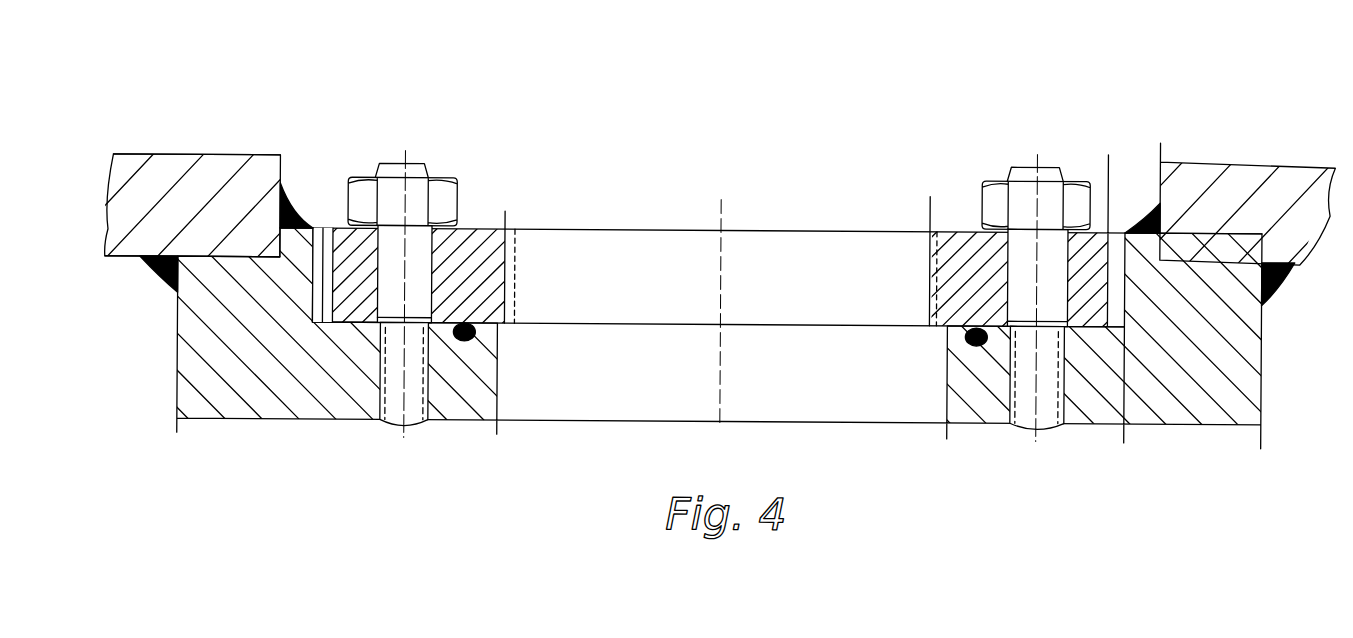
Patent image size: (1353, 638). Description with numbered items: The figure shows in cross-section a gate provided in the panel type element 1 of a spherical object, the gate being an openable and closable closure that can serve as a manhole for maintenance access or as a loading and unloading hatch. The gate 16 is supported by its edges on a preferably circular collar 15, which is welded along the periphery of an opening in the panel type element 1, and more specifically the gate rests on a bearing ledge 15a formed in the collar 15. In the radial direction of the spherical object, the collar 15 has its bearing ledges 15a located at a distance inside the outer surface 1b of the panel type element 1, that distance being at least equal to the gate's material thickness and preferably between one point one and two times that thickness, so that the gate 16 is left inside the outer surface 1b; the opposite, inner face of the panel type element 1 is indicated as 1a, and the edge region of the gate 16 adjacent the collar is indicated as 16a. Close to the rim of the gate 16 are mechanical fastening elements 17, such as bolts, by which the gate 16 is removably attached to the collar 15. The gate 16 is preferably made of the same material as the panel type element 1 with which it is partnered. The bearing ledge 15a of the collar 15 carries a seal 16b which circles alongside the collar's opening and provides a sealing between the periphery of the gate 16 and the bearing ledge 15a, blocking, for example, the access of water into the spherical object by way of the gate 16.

The panel type element 1 is at (240, 168).
The lower side of panel 1a is at (113, 257).
The outer surface 1b is at (165, 148).
The collar 15 is at (203, 377).
The bearing ledge 15a is at (318, 250).
The gate 16 is at (483, 240).
The edge of cover plate 16a is at (517, 263).
The seal 16b is at (468, 333).
The fastening elements 17 is at (415, 388).